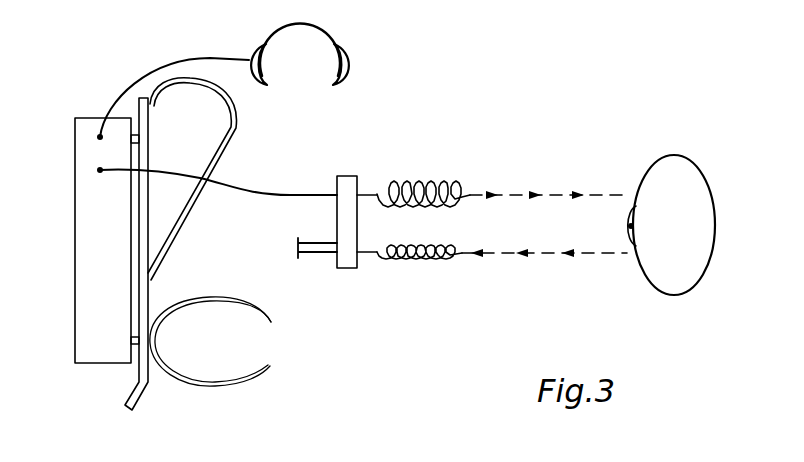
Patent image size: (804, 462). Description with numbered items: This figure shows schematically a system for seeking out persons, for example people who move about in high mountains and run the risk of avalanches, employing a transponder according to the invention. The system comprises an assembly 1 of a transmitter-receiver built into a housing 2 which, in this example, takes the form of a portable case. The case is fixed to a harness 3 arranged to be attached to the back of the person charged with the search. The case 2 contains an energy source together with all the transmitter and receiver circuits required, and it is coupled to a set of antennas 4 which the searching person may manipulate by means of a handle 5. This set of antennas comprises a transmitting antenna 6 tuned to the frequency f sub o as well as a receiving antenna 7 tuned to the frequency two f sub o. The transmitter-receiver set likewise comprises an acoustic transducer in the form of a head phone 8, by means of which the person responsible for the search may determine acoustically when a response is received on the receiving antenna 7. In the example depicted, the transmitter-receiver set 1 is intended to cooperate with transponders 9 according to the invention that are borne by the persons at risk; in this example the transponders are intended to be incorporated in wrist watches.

The transmitter-receiver assembly 1 is at (250, 168).
The housing 2 is at (88, 262).
The harness 3 is at (138, 394).
The set of antennas 4 is at (385, 163).
The handle 5 is at (313, 248).
The transmitting antenna 6 is at (437, 186).
The receiving antenna 7 is at (438, 258).
The head phone 8 is at (352, 62).
The transponder 9 is at (642, 152).